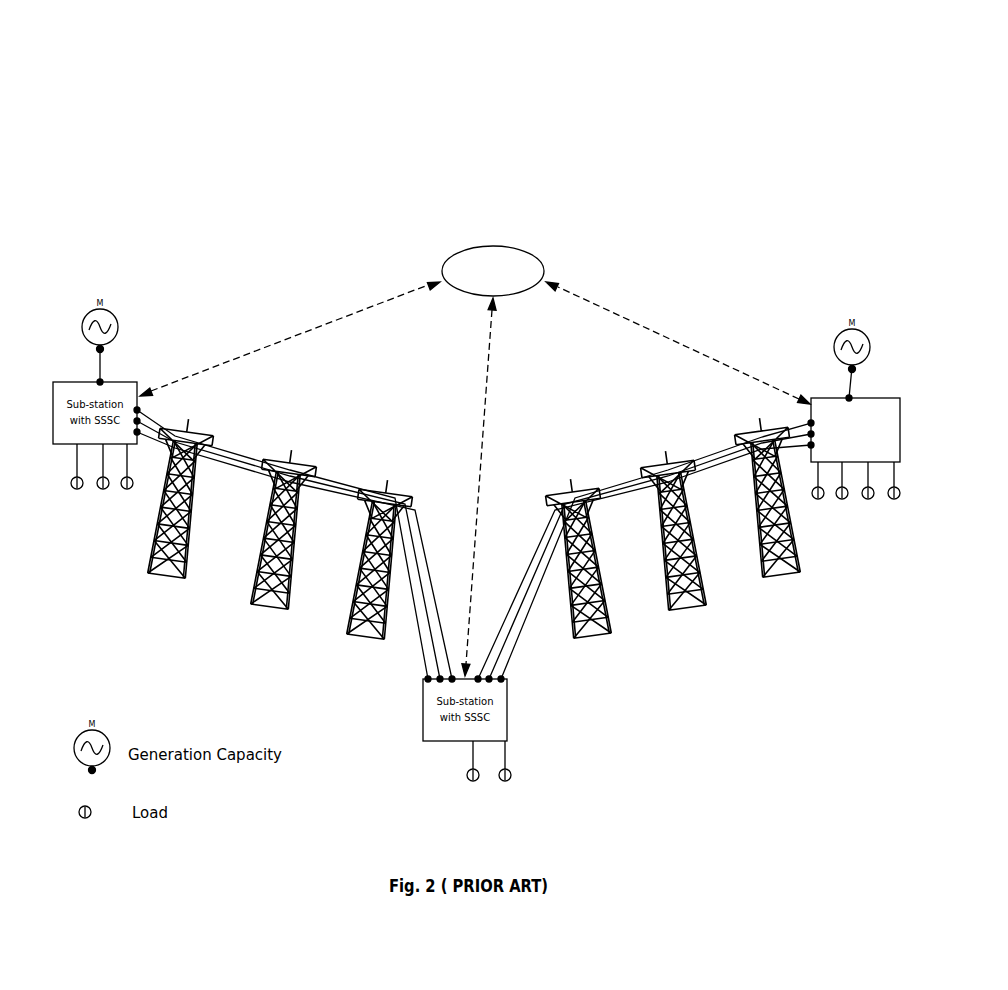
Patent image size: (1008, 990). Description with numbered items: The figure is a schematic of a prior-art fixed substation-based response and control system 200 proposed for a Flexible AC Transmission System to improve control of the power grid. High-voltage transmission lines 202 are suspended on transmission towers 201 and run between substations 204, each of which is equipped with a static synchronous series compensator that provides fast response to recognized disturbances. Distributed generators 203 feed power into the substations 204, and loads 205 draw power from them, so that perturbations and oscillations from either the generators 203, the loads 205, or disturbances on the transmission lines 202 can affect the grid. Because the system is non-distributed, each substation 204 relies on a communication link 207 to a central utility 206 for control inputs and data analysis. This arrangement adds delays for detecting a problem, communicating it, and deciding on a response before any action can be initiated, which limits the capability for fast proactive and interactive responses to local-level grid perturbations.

The fixed substation-based response and control system 200 is at (556, 118).
The transmission towers 201 is at (214, 437).
The high-voltage transmission lines 202 is at (343, 492).
The distributed generators 203 is at (104, 312).
The substations 204 is at (128, 384).
The loads 205 is at (104, 488).
The central utility 206 is at (527, 252).
The communication link 207 is at (368, 306).